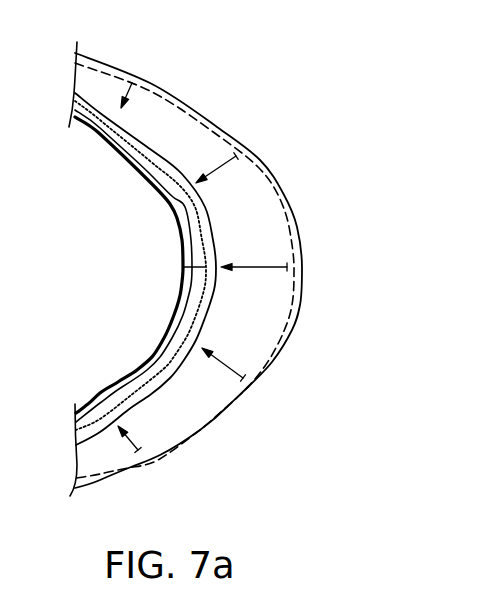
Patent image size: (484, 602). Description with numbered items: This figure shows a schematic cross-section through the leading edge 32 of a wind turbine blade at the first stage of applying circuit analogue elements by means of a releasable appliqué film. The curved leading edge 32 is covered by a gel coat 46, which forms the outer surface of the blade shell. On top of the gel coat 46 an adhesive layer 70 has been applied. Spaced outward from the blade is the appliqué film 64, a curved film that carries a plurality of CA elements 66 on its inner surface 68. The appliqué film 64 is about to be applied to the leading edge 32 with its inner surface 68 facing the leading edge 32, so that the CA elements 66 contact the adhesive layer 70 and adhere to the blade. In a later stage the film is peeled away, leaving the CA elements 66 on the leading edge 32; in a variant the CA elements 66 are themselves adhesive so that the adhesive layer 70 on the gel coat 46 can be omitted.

The leading edge 32 is at (115, 268).
The gel coat 46 is at (114, 406).
The appliqué film 64 is at (188, 105).
The CA elements 66 is at (107, 75).
The inner surface 68 is at (223, 141).
The adhesive layer 70 is at (87, 442).